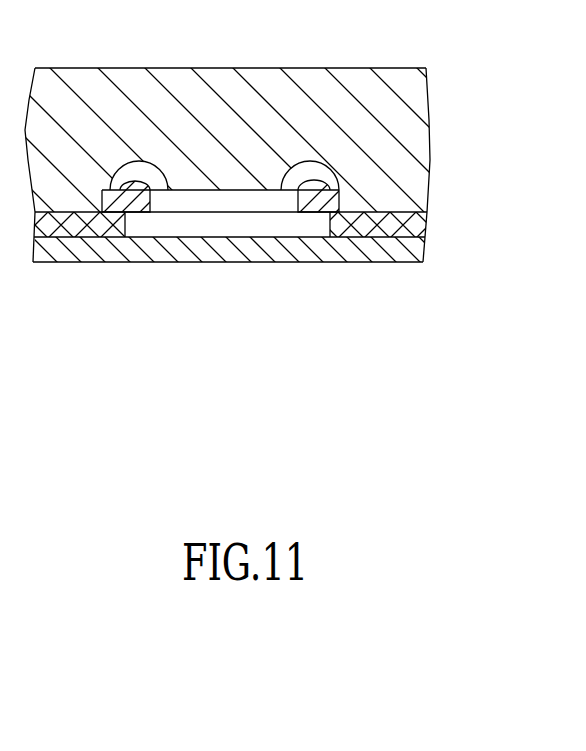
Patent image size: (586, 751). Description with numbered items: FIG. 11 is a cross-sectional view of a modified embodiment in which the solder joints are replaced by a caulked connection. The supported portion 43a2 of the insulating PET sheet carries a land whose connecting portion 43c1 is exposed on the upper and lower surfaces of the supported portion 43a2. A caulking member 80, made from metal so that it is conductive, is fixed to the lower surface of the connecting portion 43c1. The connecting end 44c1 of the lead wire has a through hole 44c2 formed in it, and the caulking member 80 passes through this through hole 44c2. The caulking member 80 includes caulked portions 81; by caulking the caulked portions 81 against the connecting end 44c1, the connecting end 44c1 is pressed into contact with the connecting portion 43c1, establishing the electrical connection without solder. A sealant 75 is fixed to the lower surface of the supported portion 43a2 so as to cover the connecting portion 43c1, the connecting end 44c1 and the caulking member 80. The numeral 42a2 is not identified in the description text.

The sealant 75 is at (302, 120).
The caulking member 80 is at (237, 200).
The caulked portions 81 is at (143, 162).
The connecting end 44c1 is at (343, 201).
The through hole 44c2 is at (297, 214).
The supported portion 43a2 is at (428, 224).
The connecting portion 43c1 is at (217, 226).
The base layer 42a2 is at (401, 263).